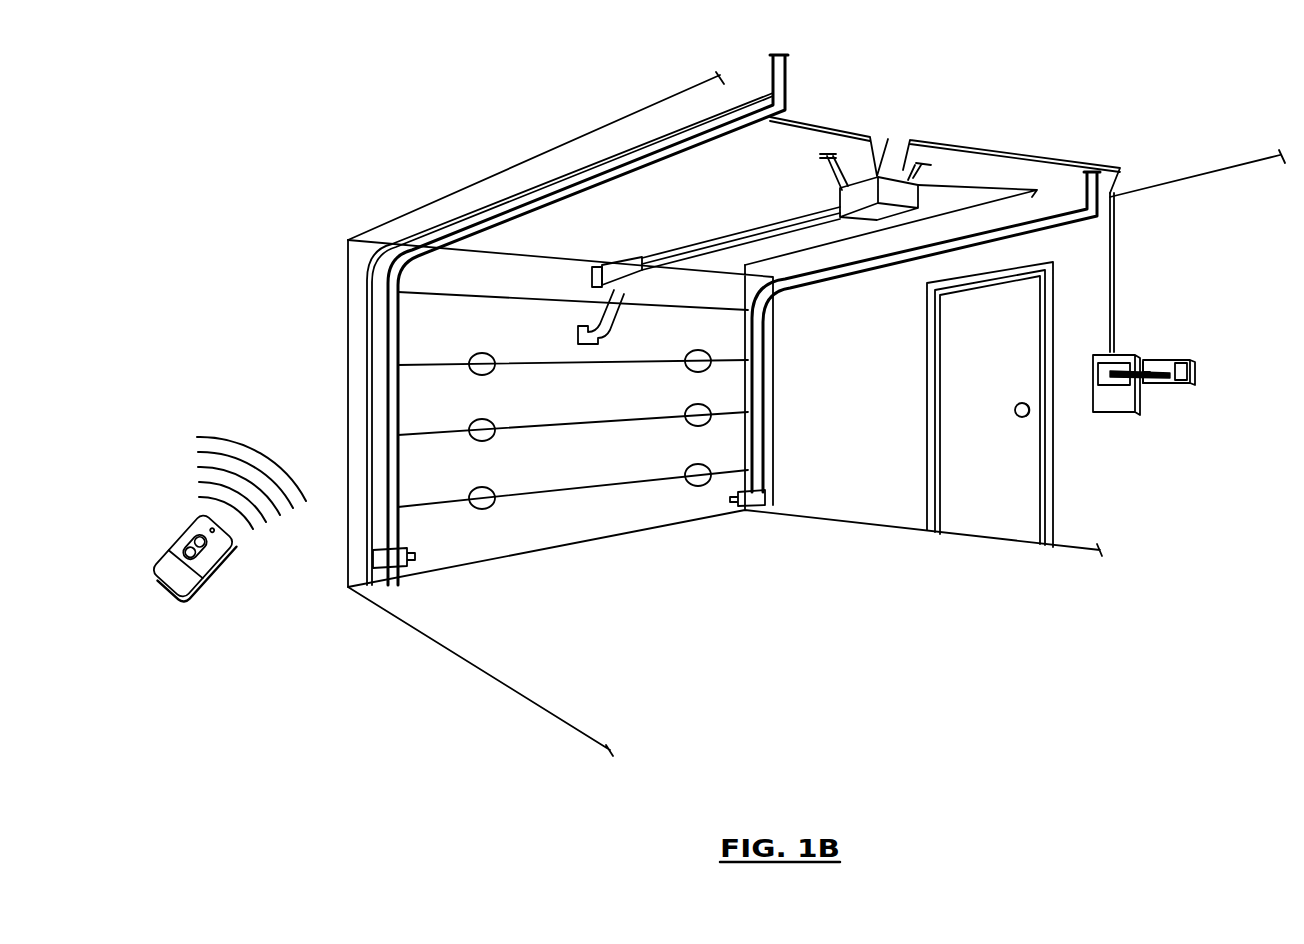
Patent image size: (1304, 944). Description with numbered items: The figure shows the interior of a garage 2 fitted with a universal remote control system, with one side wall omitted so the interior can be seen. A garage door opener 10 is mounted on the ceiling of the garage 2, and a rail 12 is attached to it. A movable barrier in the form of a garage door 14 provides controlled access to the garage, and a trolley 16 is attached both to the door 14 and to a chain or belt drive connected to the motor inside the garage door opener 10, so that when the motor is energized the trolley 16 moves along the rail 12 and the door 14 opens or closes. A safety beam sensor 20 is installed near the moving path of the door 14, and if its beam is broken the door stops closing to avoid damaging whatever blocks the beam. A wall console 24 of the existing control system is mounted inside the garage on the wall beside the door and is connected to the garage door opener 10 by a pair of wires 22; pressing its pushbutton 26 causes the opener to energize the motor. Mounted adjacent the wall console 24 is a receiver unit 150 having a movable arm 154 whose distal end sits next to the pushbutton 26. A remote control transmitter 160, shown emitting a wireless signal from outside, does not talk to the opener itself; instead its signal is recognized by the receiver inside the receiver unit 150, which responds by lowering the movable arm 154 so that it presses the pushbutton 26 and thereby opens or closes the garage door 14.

The garage 2 is at (413, 186).
The garage door opener 10 is at (908, 196).
The rail 12 is at (726, 235).
The garage door 14 is at (605, 527).
The trolley 16 is at (622, 259).
The safety beam sensor 20 is at (400, 566).
The pair of wires 22 is at (1115, 288).
The wall console 24 is at (1105, 407).
The pushbutton 26 is at (1126, 368).
The receiver unit 150 is at (1175, 386).
The movable arm 154 is at (1143, 385).
The remote control transmitter 160 is at (203, 594).